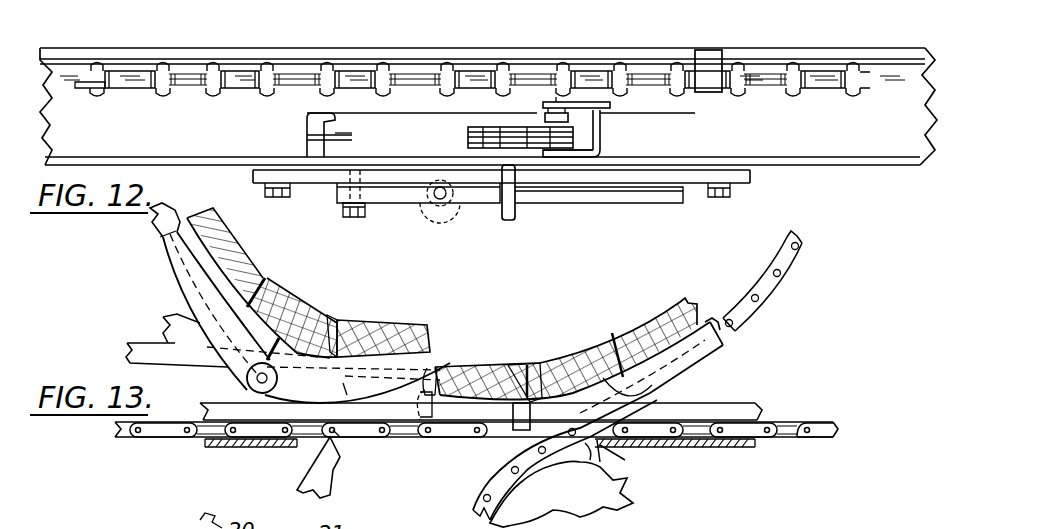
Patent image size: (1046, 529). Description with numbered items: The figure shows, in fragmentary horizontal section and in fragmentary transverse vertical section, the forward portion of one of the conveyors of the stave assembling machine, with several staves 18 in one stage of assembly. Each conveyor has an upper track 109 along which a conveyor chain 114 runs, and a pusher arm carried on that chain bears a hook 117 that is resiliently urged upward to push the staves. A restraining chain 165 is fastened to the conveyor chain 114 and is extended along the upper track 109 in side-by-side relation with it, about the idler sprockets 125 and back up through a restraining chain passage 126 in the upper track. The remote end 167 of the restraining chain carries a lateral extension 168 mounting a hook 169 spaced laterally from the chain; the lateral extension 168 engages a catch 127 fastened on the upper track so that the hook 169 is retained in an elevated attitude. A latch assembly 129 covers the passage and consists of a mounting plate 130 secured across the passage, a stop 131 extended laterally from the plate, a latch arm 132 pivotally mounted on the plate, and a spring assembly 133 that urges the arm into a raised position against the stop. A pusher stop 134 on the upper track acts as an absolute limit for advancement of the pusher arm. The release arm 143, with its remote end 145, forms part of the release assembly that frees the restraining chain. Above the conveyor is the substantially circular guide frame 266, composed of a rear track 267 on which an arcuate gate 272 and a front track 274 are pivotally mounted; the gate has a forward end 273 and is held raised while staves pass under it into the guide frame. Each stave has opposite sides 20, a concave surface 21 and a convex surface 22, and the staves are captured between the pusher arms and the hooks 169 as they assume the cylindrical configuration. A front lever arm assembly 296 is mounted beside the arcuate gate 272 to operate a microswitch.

In FIG. 12, the upper track 109 is at (187, 50).
In FIG. 13, the upper track 109 is at (700, 450).
In FIG. 12, the conveyor chain 114 is at (407, 72).
In FIG. 13, the conveyor chain 114 is at (805, 423).
In FIG. 13, the hook 117 is at (425, 390).
In FIG. 13, the idler sprockets 125 is at (607, 490).
In FIG. 12, the restraining chain passage 126 is at (307, 115).
In FIG. 13, the restraining chain passage 126 is at (590, 447).
In FIG. 12, the catch 127 is at (543, 113).
In FIG. 12, the latch assembly 129 is at (553, 205).
In FIG. 12, the mounting plate 130 is at (747, 178).
In FIG. 12, the stop 131 is at (503, 212).
In FIG. 12, the latch arm 132 is at (483, 204).
In FIG. 12, the spring assembly 133 is at (443, 203).
In FIG. 12, the pusher stop 134 is at (712, 65).
In FIG. 12, the release arm 143 is at (343, 133).
In FIG. 13, the release arm 143 is at (303, 477).
In FIG. 12, the remote end 145 is at (347, 133).
In FIG. 13, the remote end 145 is at (337, 432).
In FIG. 12, the restraining chain 165 is at (467, 136).
In FIG. 13, the restraining chain 165 is at (477, 513).
In FIG. 12, the remote end 167 is at (597, 152).
In FIG. 12, the lateral extension 168 is at (600, 128).
In FIG. 12, the hook 169 is at (575, 101).
In FIG. 13, the hook 169 is at (437, 367).
In FIG. 13, the staves 18 is at (267, 274).
In FIG. 13, the sides 20 is at (430, 325).
In FIG. 13, the concave surface 21 is at (237, 247).
In FIG. 13, the convex surface 22 is at (187, 282).
In FIG. 13, the guide frame 266 is at (729, 349).
In FIG. 13, the rear track 267 is at (163, 250).
In FIG. 13, the arcuate gate 272 is at (343, 383).
In FIG. 13, the forward end 273 is at (440, 362).
In FIG. 13, the front track 274 is at (708, 323).
In FIG. 13, the front lever arm assembly 296 is at (155, 353).